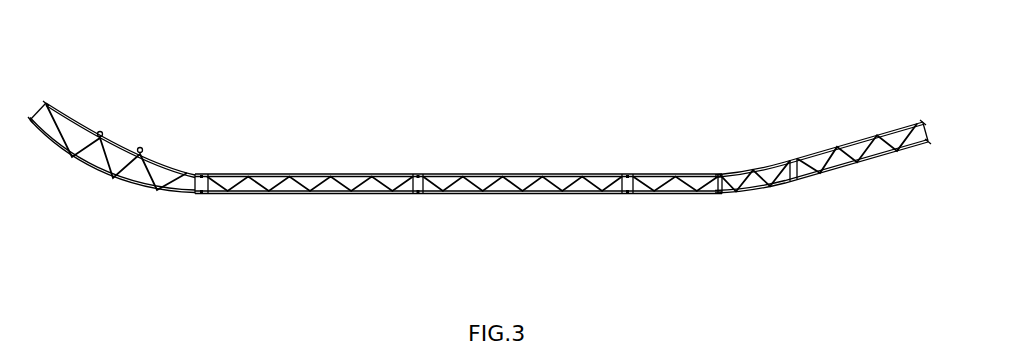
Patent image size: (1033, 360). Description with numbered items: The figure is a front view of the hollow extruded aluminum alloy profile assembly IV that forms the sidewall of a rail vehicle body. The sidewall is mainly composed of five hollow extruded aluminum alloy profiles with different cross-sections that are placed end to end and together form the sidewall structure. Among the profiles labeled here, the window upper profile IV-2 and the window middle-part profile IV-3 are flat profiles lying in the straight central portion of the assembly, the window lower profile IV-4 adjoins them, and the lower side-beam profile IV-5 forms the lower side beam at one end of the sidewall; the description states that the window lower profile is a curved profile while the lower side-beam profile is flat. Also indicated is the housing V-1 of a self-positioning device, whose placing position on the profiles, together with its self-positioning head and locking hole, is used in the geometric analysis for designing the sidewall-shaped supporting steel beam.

The housing V-1 is at (117, 150).
The hollow extruded aluminum alloy profile assembly IV is at (472, 193).
The window upper profile IV-2 is at (318, 173).
The window middle-part profile IV-3 is at (521, 173).
The window lower profile IV-4 is at (686, 173).
The lower side-beam profile IV-5 is at (859, 139).